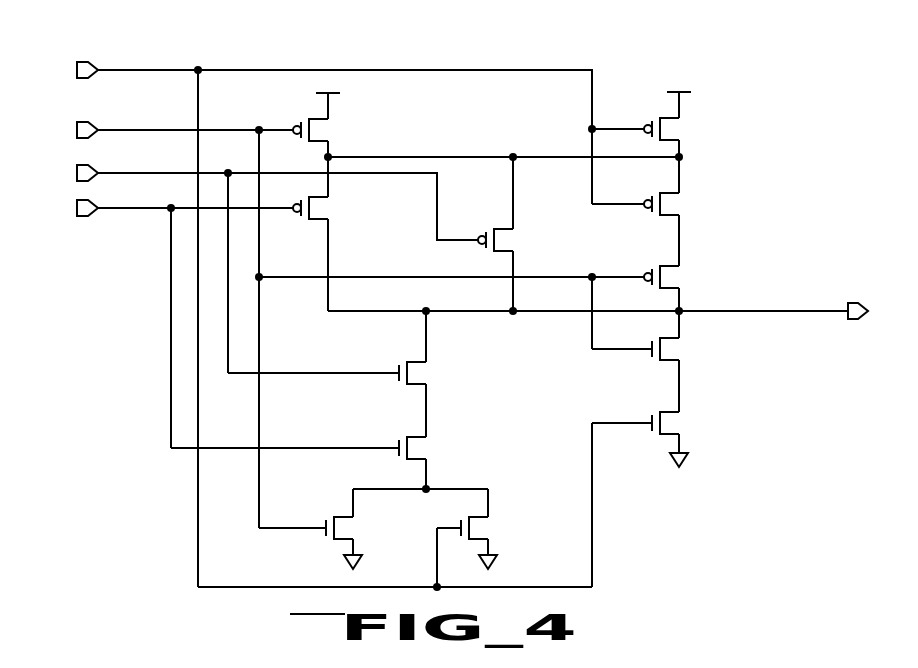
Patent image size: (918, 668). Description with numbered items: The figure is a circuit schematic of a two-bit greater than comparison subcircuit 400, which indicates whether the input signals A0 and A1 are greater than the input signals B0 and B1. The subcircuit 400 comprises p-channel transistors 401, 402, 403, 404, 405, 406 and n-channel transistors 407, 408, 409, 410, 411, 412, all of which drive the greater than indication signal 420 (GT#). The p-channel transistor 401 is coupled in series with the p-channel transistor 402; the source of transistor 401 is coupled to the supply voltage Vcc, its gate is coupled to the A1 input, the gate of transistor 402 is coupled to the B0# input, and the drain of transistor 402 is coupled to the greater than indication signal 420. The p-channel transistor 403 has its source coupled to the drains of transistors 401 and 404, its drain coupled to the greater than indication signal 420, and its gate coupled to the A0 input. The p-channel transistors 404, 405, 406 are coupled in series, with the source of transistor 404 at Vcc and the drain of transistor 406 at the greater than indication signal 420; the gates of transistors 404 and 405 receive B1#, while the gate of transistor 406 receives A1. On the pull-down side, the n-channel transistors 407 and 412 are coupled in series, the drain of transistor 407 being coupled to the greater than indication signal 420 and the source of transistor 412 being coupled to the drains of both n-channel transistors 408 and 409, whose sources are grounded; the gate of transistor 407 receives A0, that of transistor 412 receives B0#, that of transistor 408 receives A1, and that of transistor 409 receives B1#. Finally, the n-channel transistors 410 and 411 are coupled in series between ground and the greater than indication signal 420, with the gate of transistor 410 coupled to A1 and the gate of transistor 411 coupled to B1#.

The subcircuit 400 is at (337, 69).
The p-channel transistor 401 is at (322, 131).
The p-channel transistor 402 is at (322, 208).
The p-channel transistor 403 is at (505, 242).
The p-channel transistor 404 is at (673, 131).
The p-channel transistor 405 is at (673, 205).
The p-channel transistor 406 is at (673, 277).
The n-channel transistor 407 is at (420, 374).
The n-channel transistor 408 is at (346, 528).
The n-channel transistor 409 is at (480, 528).
The n-channel transistor 410 is at (673, 349).
The n-channel transistor 411 is at (673, 423).
The n-channel transistor 412 is at (420, 448).
The greater than indication signal 420 is at (790, 317).